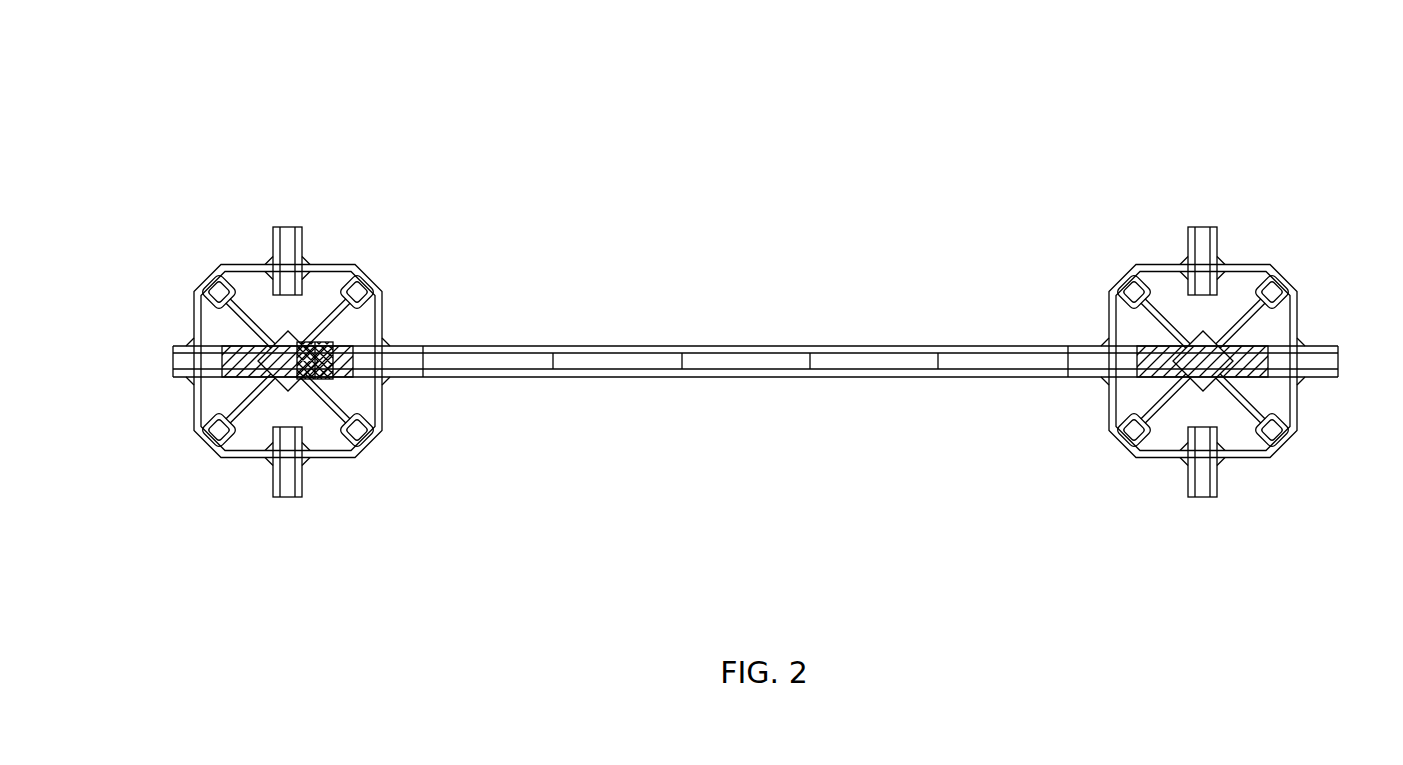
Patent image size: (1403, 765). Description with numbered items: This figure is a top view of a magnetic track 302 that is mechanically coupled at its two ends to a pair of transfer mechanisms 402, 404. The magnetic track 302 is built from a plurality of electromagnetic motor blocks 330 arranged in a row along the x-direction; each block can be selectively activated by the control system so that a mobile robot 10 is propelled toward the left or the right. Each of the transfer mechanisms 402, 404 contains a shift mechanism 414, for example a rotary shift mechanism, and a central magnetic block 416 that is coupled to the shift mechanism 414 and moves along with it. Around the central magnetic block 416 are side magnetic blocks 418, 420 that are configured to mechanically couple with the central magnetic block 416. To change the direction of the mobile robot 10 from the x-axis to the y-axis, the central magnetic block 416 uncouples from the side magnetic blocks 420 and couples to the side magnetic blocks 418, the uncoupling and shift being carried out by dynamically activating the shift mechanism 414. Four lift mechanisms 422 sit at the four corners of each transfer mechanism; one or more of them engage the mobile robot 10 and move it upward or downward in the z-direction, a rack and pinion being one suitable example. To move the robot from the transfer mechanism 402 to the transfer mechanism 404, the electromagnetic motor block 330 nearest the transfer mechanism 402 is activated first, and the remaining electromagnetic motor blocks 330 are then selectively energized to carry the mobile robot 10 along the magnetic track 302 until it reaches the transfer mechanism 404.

The mobile robot 10 is at (315, 380).
The magnetic track 302 is at (728, 410).
The electromagnetic motor blocks 330 is at (497, 347).
The transfer mechanism 402 is at (268, 104).
The transfer mechanism 404 is at (1208, 104).
The shift mechanism 414 is at (297, 333).
The central magnetic block 416 is at (343, 378).
The side magnetic blocks 418 is at (287, 227).
The side magnetic blocks 420 is at (398, 346).
The lift mechanisms 422 is at (207, 283).